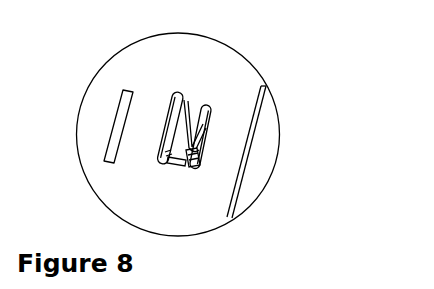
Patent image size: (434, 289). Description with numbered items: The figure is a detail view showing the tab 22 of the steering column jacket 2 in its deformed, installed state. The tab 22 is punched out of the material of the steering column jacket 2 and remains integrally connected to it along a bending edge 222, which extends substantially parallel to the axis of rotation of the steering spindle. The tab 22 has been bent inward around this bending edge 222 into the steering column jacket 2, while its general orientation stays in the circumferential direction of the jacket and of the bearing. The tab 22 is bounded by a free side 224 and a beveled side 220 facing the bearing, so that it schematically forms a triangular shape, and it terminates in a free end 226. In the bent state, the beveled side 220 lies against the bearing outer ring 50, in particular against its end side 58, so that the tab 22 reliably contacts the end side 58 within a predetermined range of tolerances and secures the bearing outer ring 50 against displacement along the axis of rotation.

The steering column jacket 2 is at (165, 58).
The tab 22 is at (205, 117).
The bearing outer ring 50 is at (170, 160).
The end side 58 is at (200, 162).
The beveled side 220 is at (178, 116).
The bending edge 222 is at (194, 101).
The free side 224 is at (208, 132).
The free end 226 is at (200, 148).